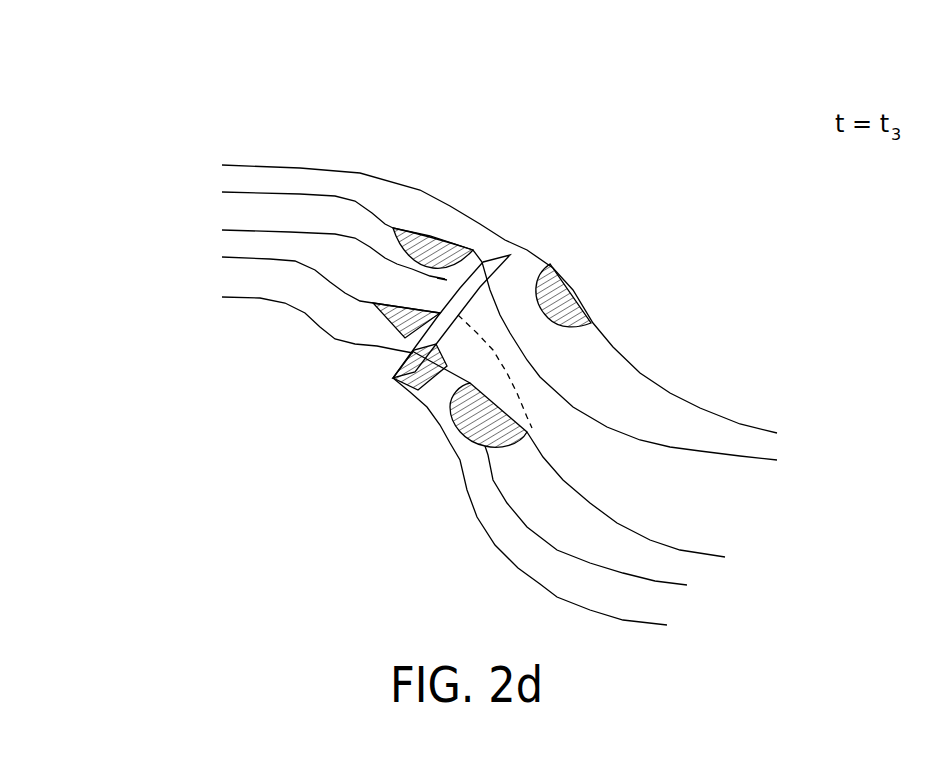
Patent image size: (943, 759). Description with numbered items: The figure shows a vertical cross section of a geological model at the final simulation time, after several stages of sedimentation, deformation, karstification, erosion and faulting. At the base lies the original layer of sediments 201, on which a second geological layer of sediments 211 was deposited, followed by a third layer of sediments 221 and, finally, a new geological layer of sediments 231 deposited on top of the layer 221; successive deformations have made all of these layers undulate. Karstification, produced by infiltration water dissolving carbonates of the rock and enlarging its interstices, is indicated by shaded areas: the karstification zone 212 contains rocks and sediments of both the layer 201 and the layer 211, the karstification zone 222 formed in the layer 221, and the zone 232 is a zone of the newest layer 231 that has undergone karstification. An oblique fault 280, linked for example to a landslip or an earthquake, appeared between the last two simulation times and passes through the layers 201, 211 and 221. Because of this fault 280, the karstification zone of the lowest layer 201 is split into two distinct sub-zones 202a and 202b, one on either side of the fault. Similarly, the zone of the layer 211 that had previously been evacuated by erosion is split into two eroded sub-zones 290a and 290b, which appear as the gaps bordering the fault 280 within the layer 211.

The layer of sediments 201 is at (224, 284).
The sub-zone of karstification zone 202a is at (400, 343).
The sub-zone of karstification zone 202b is at (413, 387).
The geological layer of sediments 211 is at (221, 244).
The karstification zone 212 is at (458, 451).
The layer of sediments 221 is at (218, 207).
The karstification zone 222 is at (423, 226).
The geological layer of sediments 231 is at (215, 176).
The karstification zone 232 is at (583, 287).
The oblique fault 280 is at (517, 254).
The eroded sub-zone 290a is at (521, 387).
The eroded sub-zone 290b is at (460, 280).